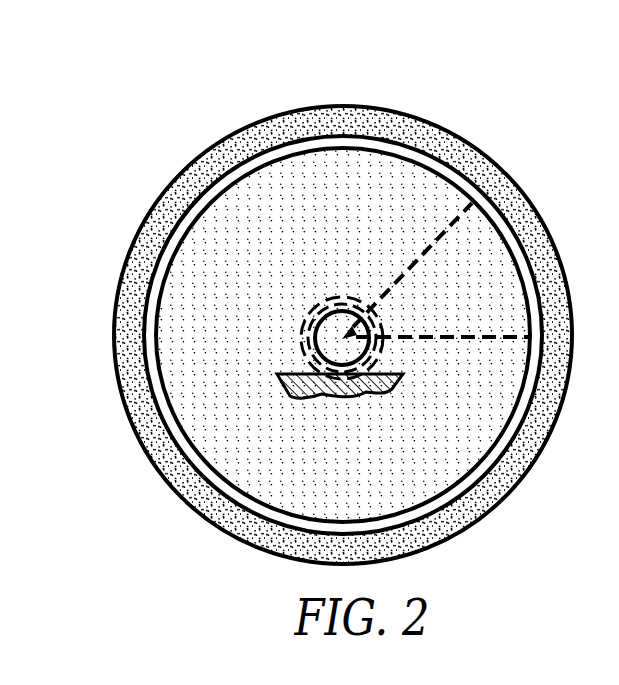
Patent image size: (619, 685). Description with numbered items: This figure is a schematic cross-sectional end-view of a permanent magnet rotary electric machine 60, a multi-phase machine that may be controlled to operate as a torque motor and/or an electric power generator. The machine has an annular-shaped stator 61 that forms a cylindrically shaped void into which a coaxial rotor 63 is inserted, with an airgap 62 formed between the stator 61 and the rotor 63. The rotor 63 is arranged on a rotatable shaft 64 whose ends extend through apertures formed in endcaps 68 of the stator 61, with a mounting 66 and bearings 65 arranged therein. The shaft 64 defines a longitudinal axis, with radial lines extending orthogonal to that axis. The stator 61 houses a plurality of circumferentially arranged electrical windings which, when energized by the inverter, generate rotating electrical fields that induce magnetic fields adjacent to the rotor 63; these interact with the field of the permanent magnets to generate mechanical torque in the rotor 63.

The permanent magnet rotary electric machine 60 is at (354, 295).
The stator 61 is at (403, 129).
The airgap 62 is at (252, 167).
The rotor 63 is at (305, 142).
The rotatable shaft 64 is at (320, 317).
The bearings 65 is at (300, 333).
The mounting 66 is at (306, 398).
The endcaps 68 is at (343, 163).